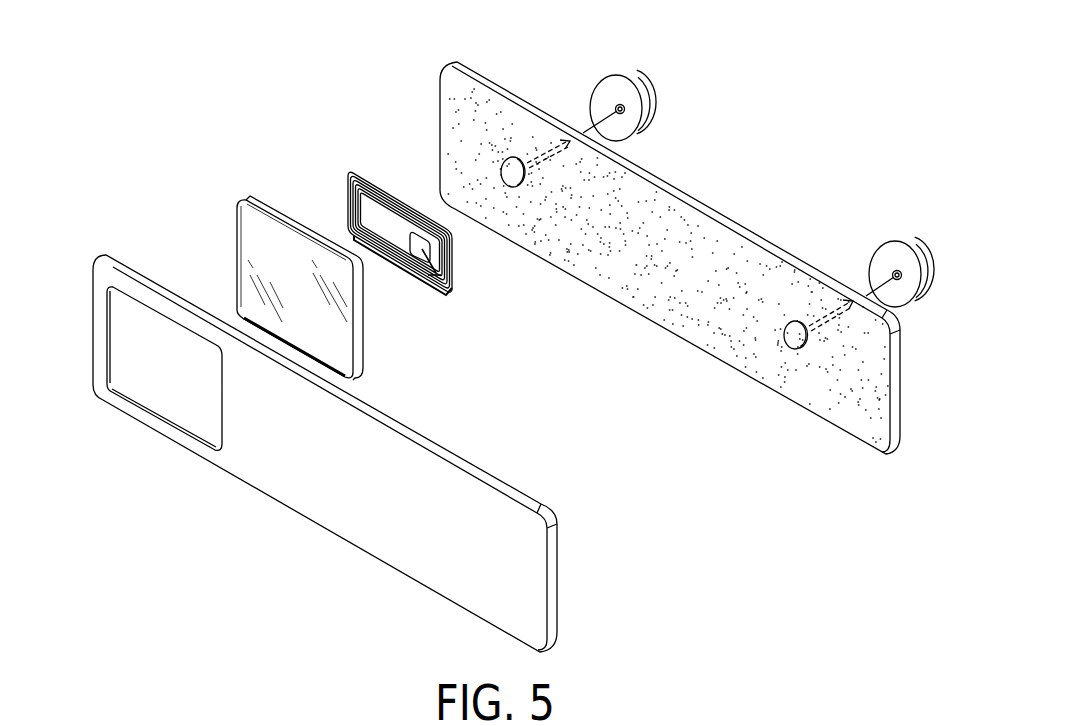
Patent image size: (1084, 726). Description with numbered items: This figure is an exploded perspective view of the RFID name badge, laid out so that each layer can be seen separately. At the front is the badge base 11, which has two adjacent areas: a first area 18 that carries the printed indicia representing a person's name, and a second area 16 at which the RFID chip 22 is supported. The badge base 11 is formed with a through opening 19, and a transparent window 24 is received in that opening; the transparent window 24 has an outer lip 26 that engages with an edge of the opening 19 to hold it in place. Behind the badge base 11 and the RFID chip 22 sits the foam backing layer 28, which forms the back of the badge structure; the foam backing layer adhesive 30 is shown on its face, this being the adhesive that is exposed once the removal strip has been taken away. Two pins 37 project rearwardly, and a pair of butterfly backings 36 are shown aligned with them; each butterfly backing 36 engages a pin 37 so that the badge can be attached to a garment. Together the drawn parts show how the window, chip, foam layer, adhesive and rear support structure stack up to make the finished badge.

The badge base 11 is at (365, 504).
The second area 16 is at (161, 451).
The first area 18 is at (425, 554).
The through opening 19 is at (152, 385).
The RFID chip 22 is at (340, 158).
The transparent window 24 is at (300, 278).
The outer lip 26 is at (356, 328).
The foam backing layer 28 is at (689, 193).
The foam backing layer adhesive 30 is at (647, 262).
The butterfly backings 36 is at (607, 90).
The pin 37 is at (500, 172).